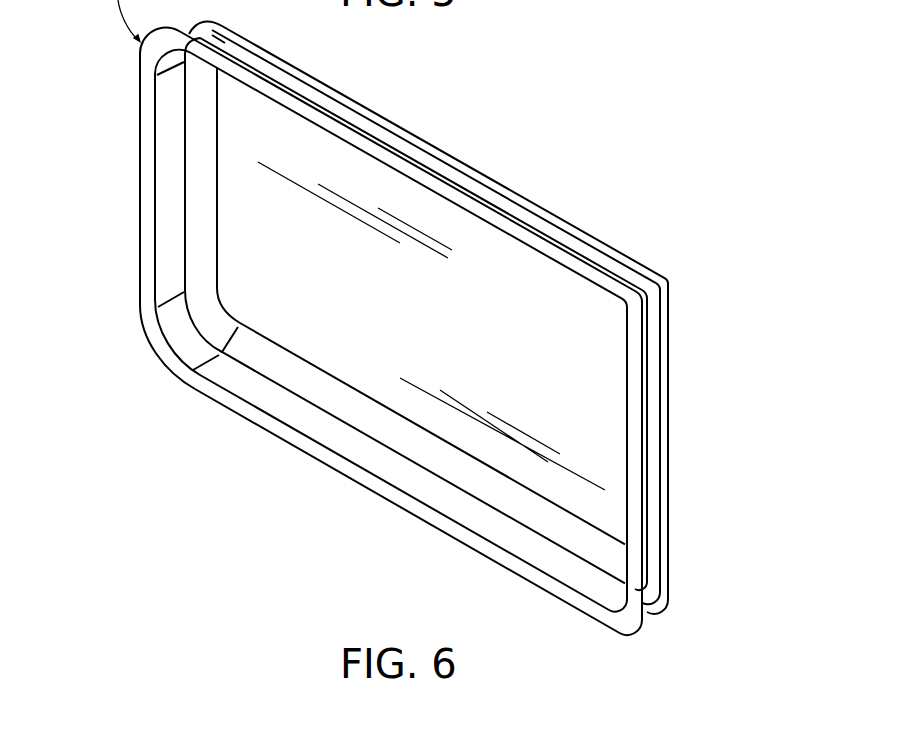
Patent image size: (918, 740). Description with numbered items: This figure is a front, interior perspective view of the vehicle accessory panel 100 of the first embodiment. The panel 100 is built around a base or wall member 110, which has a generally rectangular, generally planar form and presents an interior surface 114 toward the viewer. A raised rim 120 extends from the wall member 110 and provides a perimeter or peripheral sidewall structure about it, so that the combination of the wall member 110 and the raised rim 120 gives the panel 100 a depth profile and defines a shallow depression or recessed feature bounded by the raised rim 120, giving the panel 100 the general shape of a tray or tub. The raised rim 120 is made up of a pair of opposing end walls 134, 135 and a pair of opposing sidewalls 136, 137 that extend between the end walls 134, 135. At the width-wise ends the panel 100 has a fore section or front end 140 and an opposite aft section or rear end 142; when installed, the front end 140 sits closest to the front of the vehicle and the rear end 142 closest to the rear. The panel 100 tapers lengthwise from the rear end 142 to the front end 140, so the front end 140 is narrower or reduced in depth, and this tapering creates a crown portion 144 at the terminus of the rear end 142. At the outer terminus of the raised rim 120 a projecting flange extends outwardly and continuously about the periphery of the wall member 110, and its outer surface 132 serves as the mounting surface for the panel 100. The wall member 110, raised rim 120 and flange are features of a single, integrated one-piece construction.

The panel 100 is at (430, 317).
The wall member 110 is at (324, 324).
The interior surface 114 is at (352, 369).
The raised rim 120 is at (687, 448).
The outer surface 132 is at (143, 140).
The end wall 134 is at (172, 213).
The end wall 135 is at (657, 404).
The sidewall 136 is at (458, 177).
The sidewall 137 is at (440, 496).
The front end 140 is at (701, 546).
The rear end 142 is at (134, 346).
The crown portion 144 is at (187, 233).